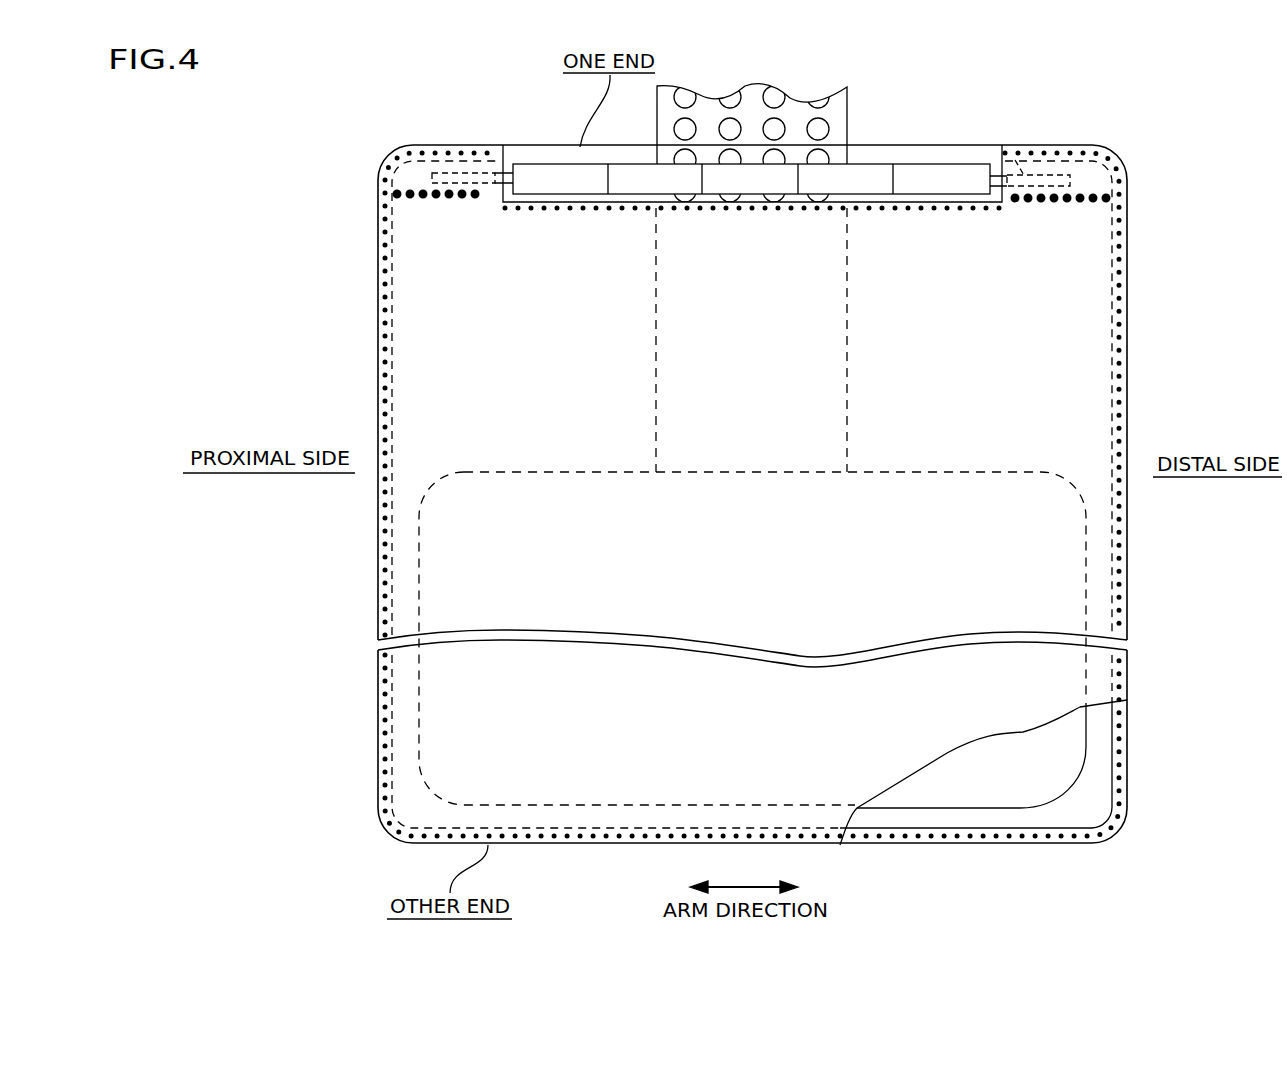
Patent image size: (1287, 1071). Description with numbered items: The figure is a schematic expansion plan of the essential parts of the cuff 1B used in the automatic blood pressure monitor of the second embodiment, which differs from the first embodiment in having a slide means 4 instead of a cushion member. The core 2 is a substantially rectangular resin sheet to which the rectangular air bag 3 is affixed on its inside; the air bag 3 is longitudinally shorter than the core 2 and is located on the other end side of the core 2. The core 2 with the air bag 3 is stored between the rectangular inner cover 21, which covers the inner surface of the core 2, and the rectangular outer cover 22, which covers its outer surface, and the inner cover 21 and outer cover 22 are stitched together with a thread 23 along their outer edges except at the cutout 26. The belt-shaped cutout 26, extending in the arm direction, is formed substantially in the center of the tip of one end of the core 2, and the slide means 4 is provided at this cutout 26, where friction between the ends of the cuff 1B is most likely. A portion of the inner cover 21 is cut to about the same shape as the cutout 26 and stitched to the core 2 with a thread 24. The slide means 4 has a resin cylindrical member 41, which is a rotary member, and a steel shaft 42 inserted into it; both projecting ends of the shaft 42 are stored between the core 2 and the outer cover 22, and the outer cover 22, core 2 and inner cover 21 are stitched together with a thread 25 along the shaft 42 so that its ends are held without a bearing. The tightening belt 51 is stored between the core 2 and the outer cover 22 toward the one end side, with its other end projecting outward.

The cuff 1B is at (1122, 138).
The core 2 is at (1065, 822).
The air bag 3 is at (965, 780).
The slide means 4 is at (968, 55).
The inner cover 21 is at (428, 235).
The outer cover 22 is at (527, 155).
The thread 23 is at (560, 836).
The thread 24 is at (957, 210).
The thread 25 is at (1053, 203).
The cutout 26 is at (505, 165).
The cylindrical member 41 is at (867, 183).
The shaft 42 is at (1020, 168).
The tightening belt 51 is at (848, 117).